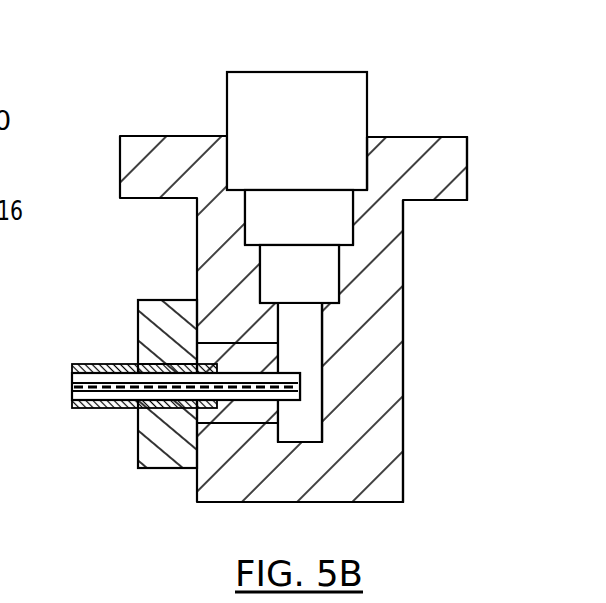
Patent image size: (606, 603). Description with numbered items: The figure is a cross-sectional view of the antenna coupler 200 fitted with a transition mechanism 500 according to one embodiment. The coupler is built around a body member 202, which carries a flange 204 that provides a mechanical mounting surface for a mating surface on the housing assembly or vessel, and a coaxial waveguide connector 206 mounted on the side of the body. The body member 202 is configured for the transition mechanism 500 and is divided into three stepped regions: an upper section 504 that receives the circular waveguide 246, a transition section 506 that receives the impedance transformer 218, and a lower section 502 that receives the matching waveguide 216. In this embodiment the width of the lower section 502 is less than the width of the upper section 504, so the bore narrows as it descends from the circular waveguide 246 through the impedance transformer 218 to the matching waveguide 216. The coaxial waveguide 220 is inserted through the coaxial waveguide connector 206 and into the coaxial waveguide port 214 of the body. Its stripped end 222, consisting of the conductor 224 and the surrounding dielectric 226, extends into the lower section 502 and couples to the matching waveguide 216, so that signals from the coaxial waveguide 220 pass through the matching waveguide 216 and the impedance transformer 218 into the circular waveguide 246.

The antenna coupler 200 is at (450, 113).
The body member 202 is at (404, 416).
The flange 204 is at (468, 161).
The coaxial waveguide connector 206 is at (138, 313).
The coaxial waveguide port 214 is at (163, 362).
The matching waveguide 216 is at (312, 318).
The impedance transformer 218 is at (342, 220).
The coaxial waveguide 220 is at (107, 408).
The stripped end 222 is at (250, 401).
The conductor 224 is at (73, 394).
The dielectric 226 is at (72, 366).
The circular waveguide 246 is at (238, 108).
The transition mechanism 500 is at (304, 221).
The lower section 502 is at (323, 362).
The upper section 504 is at (369, 152).
The transition section 506 is at (340, 272).